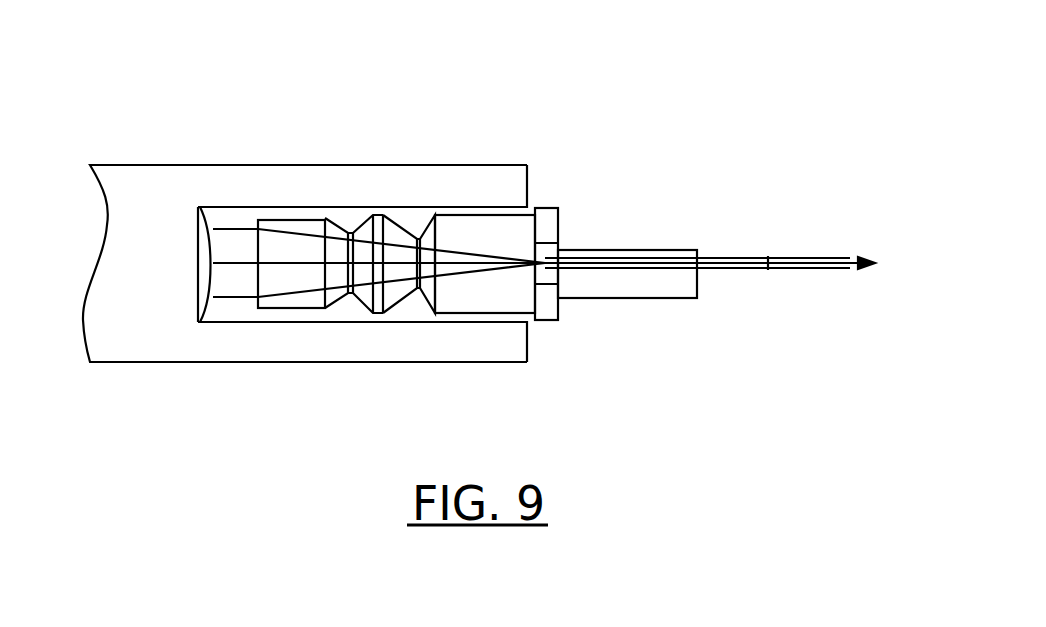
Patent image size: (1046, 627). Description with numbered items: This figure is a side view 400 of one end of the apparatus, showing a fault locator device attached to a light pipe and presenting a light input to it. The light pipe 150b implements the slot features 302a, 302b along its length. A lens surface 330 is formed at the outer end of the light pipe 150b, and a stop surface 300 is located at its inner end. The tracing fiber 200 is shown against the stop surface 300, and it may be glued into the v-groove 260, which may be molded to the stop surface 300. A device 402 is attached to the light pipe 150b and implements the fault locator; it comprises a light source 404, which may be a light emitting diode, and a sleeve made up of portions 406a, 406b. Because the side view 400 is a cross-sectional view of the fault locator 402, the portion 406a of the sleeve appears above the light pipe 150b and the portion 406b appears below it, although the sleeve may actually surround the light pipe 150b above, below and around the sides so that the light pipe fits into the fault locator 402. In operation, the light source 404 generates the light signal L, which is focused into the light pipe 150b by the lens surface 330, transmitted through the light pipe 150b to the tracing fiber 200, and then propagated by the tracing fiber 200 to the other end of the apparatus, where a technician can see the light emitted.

The side view 400 is at (355, 38).
The device 402 is at (146, 165).
The light source 404 is at (211, 300).
The portion of the sleeve 406a is at (483, 188).
The portion of the sleeve 406b is at (492, 350).
The lens surface 330 is at (255, 243).
The light pipe 150b is at (288, 221).
The slot feature 302a is at (348, 298).
The slot feature 302b is at (417, 293).
The stop surface 300 is at (559, 227).
The v-groove 260 is at (662, 300).
The tracing fiber 200 is at (747, 270).